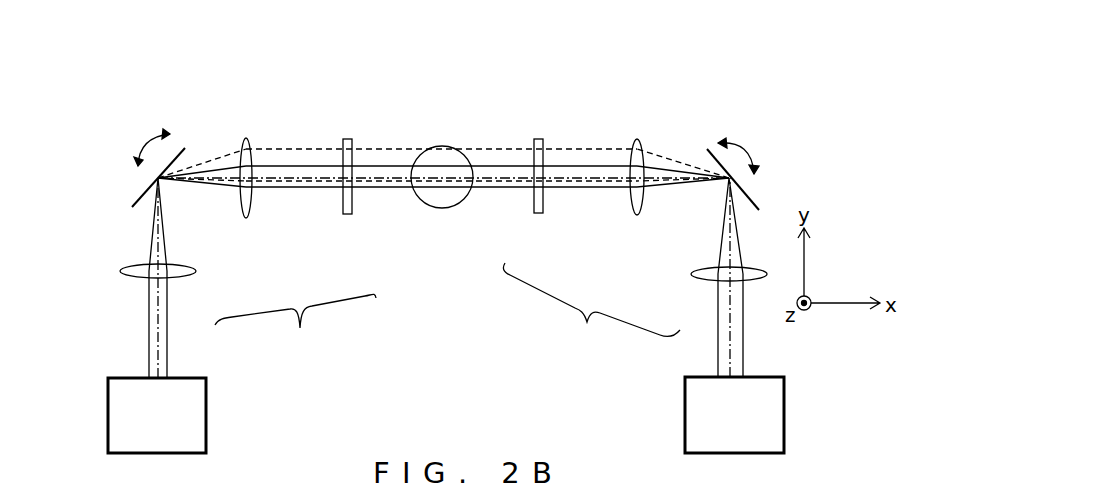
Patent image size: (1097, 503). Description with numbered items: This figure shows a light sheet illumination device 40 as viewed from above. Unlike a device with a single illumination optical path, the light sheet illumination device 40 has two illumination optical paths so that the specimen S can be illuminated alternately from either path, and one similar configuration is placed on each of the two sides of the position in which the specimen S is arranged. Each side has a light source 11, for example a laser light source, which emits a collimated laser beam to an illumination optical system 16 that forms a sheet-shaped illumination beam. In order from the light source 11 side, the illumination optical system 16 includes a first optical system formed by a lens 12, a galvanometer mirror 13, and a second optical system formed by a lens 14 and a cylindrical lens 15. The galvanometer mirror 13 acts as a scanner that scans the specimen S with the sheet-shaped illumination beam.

The light source 11 is at (207, 410).
The lens 12 is at (196, 272).
The galvanometer mirror 13 is at (133, 207).
The lens 14 is at (247, 218).
The cylindrical lens 15 is at (346, 215).
The illumination optical system 16 is at (447, 315).
The light sheet illumination device 40 is at (780, 66).
The specimen S is at (445, 147).